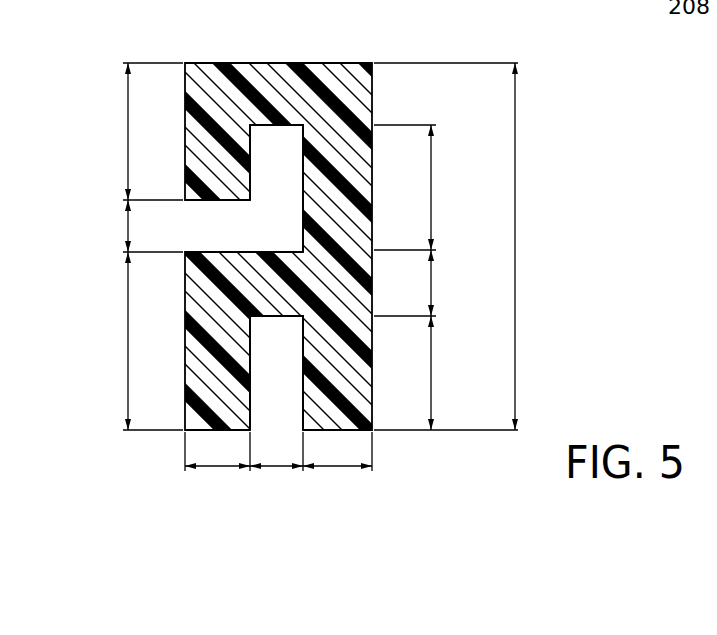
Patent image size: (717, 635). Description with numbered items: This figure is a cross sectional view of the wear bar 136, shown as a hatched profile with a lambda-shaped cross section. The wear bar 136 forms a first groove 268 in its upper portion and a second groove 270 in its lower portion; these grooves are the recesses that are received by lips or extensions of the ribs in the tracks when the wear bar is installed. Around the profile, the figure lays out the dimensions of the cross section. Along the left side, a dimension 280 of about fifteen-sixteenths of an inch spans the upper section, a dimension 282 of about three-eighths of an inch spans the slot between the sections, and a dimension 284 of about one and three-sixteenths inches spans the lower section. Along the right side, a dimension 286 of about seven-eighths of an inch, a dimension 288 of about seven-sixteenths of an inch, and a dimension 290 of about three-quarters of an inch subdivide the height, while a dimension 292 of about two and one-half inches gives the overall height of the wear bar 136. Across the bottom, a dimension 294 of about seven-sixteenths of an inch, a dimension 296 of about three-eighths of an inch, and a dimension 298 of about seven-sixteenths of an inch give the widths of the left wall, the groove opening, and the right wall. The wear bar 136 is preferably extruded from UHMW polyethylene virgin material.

The wear bar 136 is at (261, 48).
The first groove 268 is at (258, 176).
The second groove 270 is at (258, 373).
The dimension 280 is at (127, 130).
The dimension 282 is at (127, 227).
The dimension 284 is at (127, 347).
The dimension 286 is at (432, 197).
The dimension 288 is at (432, 287).
The dimension 290 is at (432, 380).
The dimension 292 is at (516, 243).
The dimension 294 is at (208, 468).
The dimension 296 is at (276, 468).
The dimension 298 is at (340, 468).